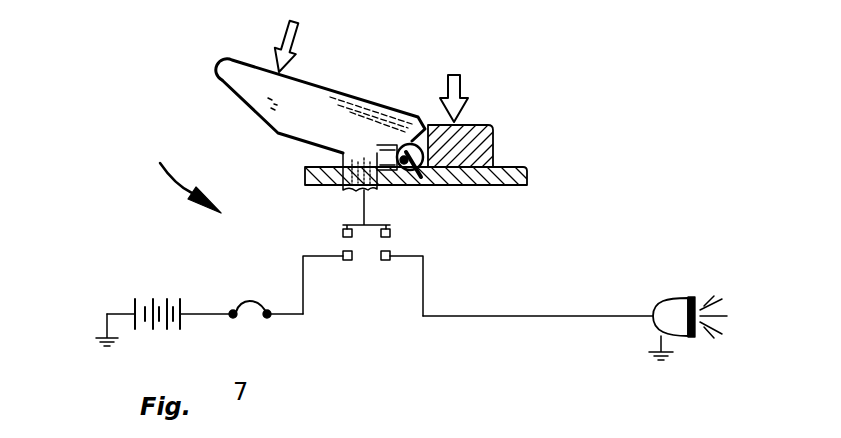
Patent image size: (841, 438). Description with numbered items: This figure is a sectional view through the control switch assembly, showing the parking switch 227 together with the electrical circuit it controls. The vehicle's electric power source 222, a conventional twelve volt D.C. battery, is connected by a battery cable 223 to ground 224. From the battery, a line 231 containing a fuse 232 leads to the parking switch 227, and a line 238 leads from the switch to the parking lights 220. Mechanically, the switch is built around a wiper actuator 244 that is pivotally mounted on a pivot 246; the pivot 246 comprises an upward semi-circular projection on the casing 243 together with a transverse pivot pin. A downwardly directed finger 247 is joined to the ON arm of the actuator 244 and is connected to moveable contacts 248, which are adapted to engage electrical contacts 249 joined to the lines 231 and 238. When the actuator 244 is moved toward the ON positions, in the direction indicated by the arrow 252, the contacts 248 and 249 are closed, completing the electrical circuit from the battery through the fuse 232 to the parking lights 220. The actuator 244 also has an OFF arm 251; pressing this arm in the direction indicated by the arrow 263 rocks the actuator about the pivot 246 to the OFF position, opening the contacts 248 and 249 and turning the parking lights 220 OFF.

The parking lights 220 is at (678, 299).
The electric power source 222 is at (150, 306).
The battery cable 223 is at (107, 314).
The ground 224 is at (106, 339).
The parking switch 227 is at (179, 175).
The line 231 is at (200, 316).
The fuse 232 is at (246, 316).
The line 238 is at (518, 317).
The casing 243 is at (527, 184).
The wiper actuator 244 is at (331, 97).
The pivot 246 is at (408, 184).
The finger 247 is at (341, 184).
The moveable contacts 248 is at (341, 231).
The electrical contacts 249 is at (346, 260).
The OFF arm 251 is at (470, 122).
The arrow 252 is at (286, 25).
The arrow 263 is at (447, 80).